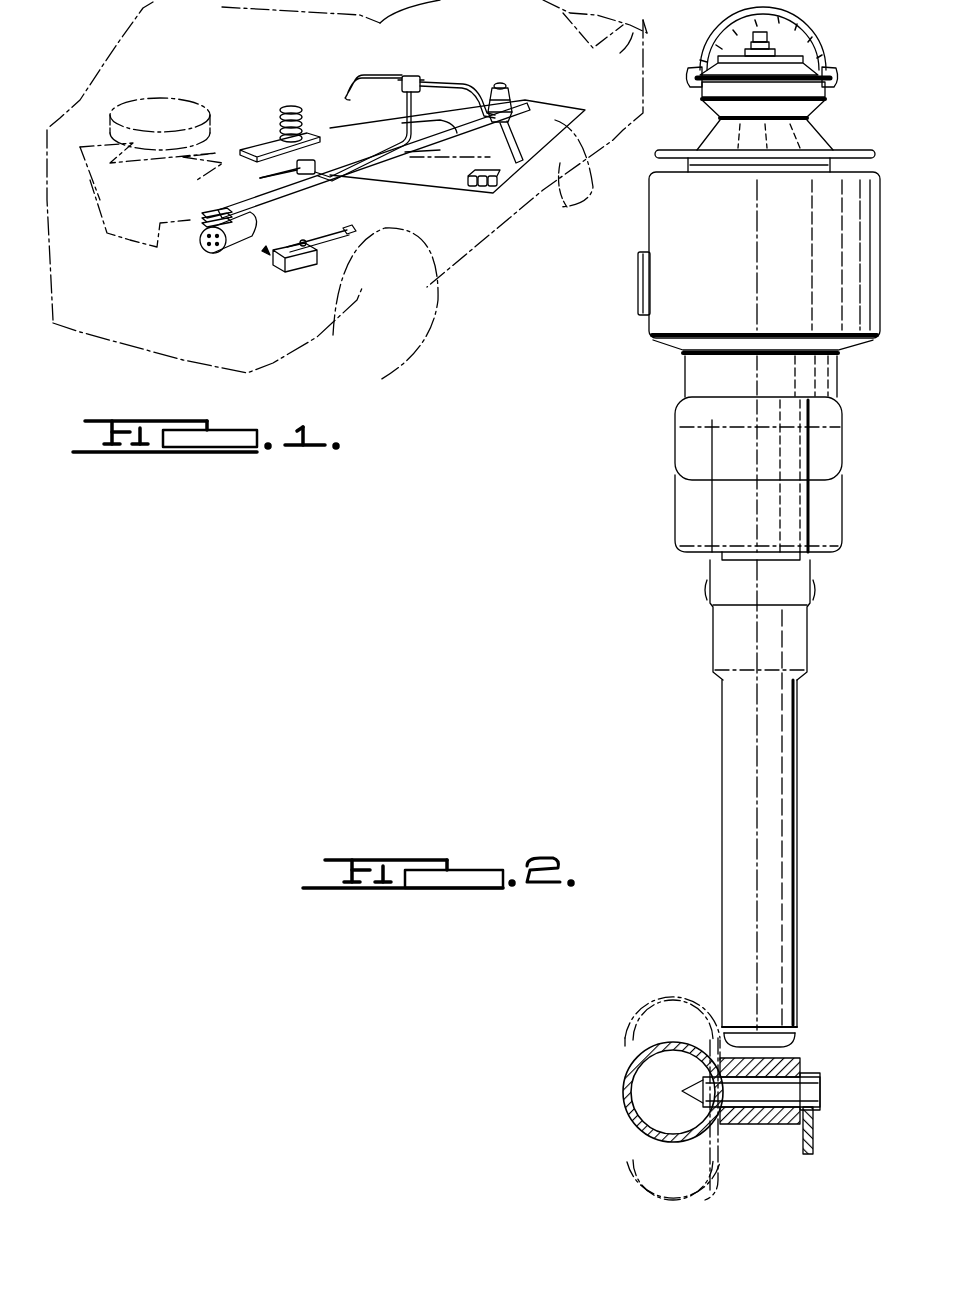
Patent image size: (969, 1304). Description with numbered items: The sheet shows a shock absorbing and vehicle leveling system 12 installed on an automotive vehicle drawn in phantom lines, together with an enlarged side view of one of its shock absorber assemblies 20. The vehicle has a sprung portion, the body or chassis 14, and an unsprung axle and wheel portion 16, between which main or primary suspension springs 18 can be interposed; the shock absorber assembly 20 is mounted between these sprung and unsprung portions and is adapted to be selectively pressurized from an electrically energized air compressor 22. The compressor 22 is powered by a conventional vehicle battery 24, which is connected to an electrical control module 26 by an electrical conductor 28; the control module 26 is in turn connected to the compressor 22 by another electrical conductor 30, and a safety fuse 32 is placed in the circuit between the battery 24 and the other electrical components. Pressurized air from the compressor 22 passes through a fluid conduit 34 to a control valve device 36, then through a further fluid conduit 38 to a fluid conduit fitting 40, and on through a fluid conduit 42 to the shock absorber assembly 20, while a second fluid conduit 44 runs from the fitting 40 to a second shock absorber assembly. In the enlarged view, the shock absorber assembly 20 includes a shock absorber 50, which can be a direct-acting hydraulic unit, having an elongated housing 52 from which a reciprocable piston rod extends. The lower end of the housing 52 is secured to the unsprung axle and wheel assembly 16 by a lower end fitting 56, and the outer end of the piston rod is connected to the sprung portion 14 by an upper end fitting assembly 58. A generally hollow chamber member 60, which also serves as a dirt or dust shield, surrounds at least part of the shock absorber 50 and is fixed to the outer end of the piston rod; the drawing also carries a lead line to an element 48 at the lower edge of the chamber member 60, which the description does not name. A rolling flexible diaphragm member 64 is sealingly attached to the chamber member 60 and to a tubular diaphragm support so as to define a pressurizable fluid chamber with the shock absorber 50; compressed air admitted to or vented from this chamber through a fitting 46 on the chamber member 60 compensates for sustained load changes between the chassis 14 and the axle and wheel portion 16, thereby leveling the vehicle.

In FIG. 1, the shock absorbing and vehicle leveling system 12 is at (458, 59).
In FIG. 1, the body or chassis 14 is at (648, 20).
In FIG. 1, the unsprung axle and wheel portion 16 is at (437, 167).
In FIG. 2, the unsprung axle and wheel portion 16 is at (627, 1098).
In FIG. 1, the main or primary suspension springs 18 is at (280, 118).
In FIG. 1, the shock absorber assembly 20 is at (523, 133).
In FIG. 2, the shock absorber assembly 20 is at (734, 603).
In FIG. 1, the air compressor 22 is at (222, 250).
In FIG. 1, the vehicle battery 24 is at (293, 267).
In FIG. 1, the electrical control module 26 is at (360, 190).
In FIG. 1, the electrical conductor 28 is at (353, 229).
In FIG. 1, the electrical conductor 30 is at (305, 218).
In FIG. 1, the safety fuse 32 is at (323, 257).
In FIG. 1, the fluid conduit 34 is at (255, 170).
In FIG. 1, the control valve device 36 is at (272, 167).
In FIG. 1, the fluid conduit 38 is at (340, 166).
In FIG. 1, the fluid conduit fitting 40 is at (413, 76).
In FIG. 1, the fluid conduit 42 is at (365, 74).
In FIG. 1, the second fluid conduit 44 is at (463, 87).
In FIG. 1, the fitting 46 is at (483, 113).
In FIG. 2, the housing 48 is at (651, 338).
In FIG. 2, the shock absorber 50 is at (727, 723).
In FIG. 2, the housing 52 is at (782, 800).
In FIG. 2, the lower end fitting 56 is at (800, 1047).
In FIG. 2, the upper end fitting assembly 58 is at (826, 139).
In FIG. 2, the chamber member 60 is at (853, 264).
In FIG. 2, the rolling flexible diaphragm member 64 is at (806, 427).